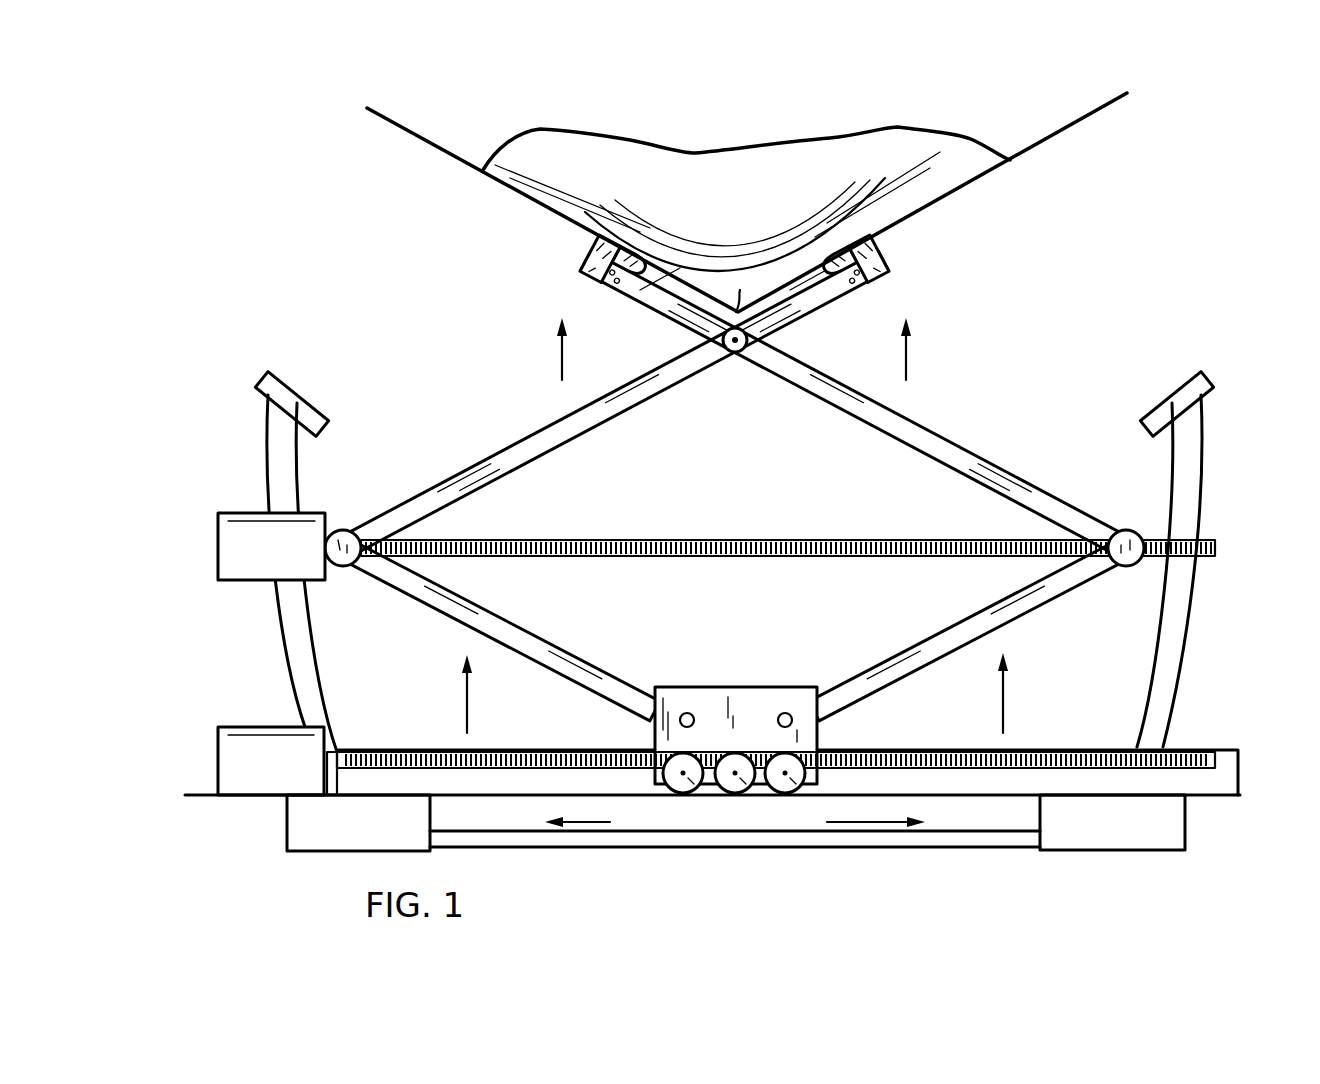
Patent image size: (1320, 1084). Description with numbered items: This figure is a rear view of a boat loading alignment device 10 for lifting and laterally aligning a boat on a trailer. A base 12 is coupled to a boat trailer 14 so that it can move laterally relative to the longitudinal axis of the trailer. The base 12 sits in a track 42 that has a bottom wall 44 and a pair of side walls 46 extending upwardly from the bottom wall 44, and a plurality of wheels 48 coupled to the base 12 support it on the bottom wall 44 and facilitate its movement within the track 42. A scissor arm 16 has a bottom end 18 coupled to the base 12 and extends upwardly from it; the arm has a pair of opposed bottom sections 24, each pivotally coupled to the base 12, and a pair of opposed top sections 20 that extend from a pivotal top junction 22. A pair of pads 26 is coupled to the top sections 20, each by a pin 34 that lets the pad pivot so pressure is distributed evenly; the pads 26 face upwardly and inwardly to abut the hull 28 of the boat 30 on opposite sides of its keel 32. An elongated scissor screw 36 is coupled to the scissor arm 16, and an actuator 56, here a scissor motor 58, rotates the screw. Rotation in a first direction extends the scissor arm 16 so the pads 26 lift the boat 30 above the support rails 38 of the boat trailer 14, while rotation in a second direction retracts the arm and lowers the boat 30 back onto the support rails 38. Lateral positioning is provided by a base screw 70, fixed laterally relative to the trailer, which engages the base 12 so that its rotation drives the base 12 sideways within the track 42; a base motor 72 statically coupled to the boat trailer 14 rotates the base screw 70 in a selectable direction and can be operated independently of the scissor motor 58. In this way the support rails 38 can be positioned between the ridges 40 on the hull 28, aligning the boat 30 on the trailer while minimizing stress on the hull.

The boat loading alignment device 10 is at (1172, 285).
The base 12 is at (808, 758).
The boat trailer 14 is at (1167, 830).
The scissor arm 16 is at (1032, 480).
The bottom end 18 is at (860, 722).
The top sections 20 is at (665, 305).
The pivotal top junction 22 is at (735, 354).
The bottom sections 24 is at (612, 680).
The pads 26 is at (592, 240).
The hull 28 is at (1018, 158).
The boat 30 is at (1052, 138).
The keel 32 is at (738, 293).
The pins 34 is at (596, 270).
The scissor screw 36 is at (692, 540).
The support rails 38 is at (302, 398).
The ridges 40 is at (358, 111).
The track 42 is at (1212, 721).
The bottom wall 44 is at (588, 796).
The side walls 46 is at (510, 750).
The wheels 48 is at (683, 784).
The actuator 56 is at (198, 590).
The scissor motor 58 is at (310, 528).
The base screw 70 is at (566, 750).
The base motor 72 is at (232, 735).